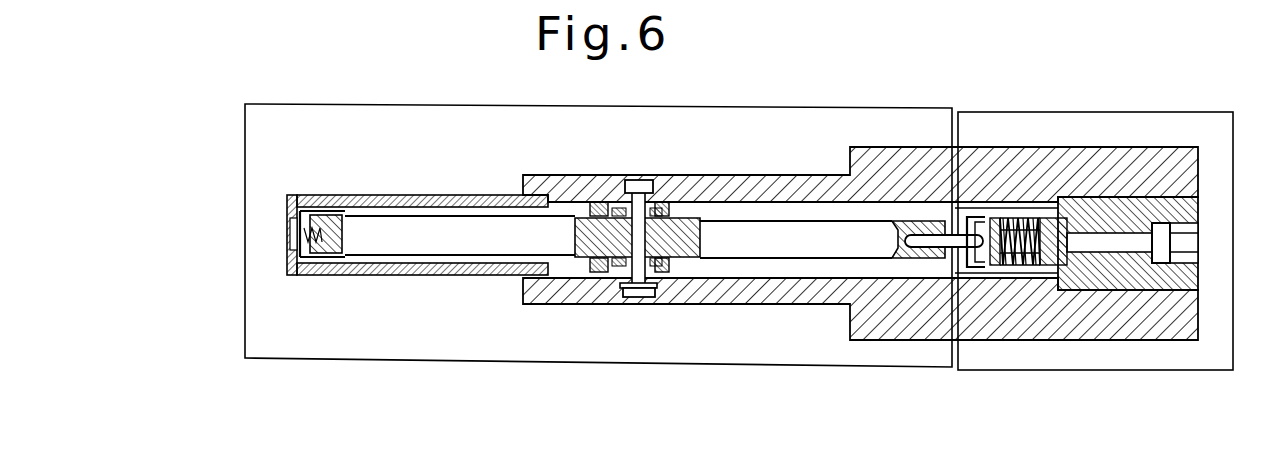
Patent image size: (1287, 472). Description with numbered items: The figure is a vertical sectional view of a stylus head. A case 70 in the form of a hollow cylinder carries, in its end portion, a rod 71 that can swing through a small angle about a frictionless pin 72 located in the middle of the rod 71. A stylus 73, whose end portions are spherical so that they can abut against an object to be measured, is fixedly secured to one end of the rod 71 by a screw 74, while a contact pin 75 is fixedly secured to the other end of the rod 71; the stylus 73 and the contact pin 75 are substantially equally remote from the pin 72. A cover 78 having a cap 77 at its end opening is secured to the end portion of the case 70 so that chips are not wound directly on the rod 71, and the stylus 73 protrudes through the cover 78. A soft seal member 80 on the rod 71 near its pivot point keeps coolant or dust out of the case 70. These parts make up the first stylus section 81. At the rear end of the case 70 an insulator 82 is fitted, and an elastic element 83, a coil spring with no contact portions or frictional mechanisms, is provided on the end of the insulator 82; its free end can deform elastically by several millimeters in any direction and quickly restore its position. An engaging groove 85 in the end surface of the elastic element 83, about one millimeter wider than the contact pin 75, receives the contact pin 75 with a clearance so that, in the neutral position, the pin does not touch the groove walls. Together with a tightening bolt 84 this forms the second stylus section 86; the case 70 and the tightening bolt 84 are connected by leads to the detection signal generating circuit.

The case 70 is at (766, 185).
The rod 71 is at (455, 233).
The frictionless pin 72 is at (640, 182).
The stylus 73 is at (318, 233).
The screw 74 is at (318, 252).
The contact pin 75 is at (945, 233).
The cap 77 is at (290, 198).
The cover 78 is at (458, 273).
The soft seal member 80 is at (605, 287).
The first stylus section 81 is at (455, 105).
The insulator 82 is at (1195, 205).
The elastic element 83 is at (1023, 225).
The tightening bolt 84 is at (1117, 240).
The engaging groove 85 is at (980, 225).
The second stylus section 86 is at (1178, 112).